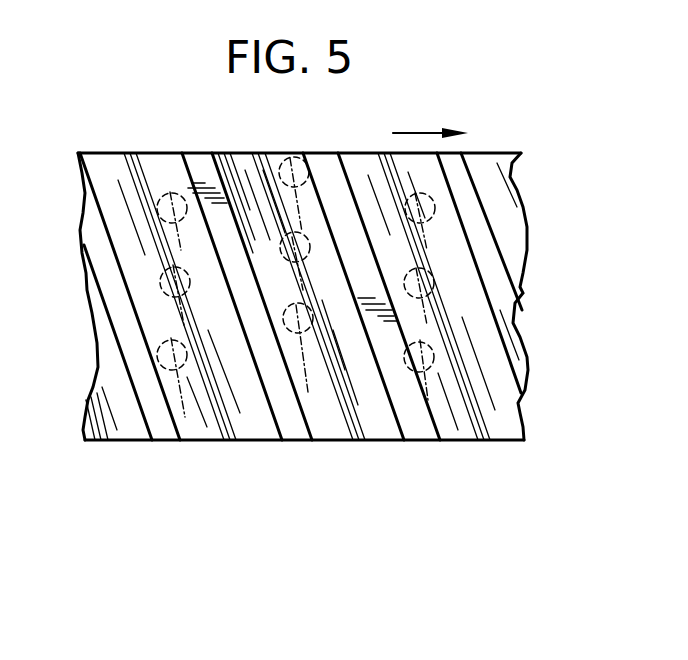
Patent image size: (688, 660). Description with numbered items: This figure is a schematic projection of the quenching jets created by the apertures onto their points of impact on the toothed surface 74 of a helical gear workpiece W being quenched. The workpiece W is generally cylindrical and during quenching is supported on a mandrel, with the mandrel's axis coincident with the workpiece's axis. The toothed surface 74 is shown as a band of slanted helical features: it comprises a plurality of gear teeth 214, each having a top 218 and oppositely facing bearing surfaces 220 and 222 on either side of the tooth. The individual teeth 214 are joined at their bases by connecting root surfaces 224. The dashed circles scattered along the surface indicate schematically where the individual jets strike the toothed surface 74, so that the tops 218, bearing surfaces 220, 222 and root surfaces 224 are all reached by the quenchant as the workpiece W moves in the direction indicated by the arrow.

The toothed surface 74 is at (130, 448).
The workpiece W is at (200, 453).
The gear teeth 214 is at (298, 450).
The tops 218 is at (418, 428).
The bearing surface 220 is at (260, 418).
The bearing surface 222 is at (320, 418).
The connecting root surfaces 224 is at (485, 443).